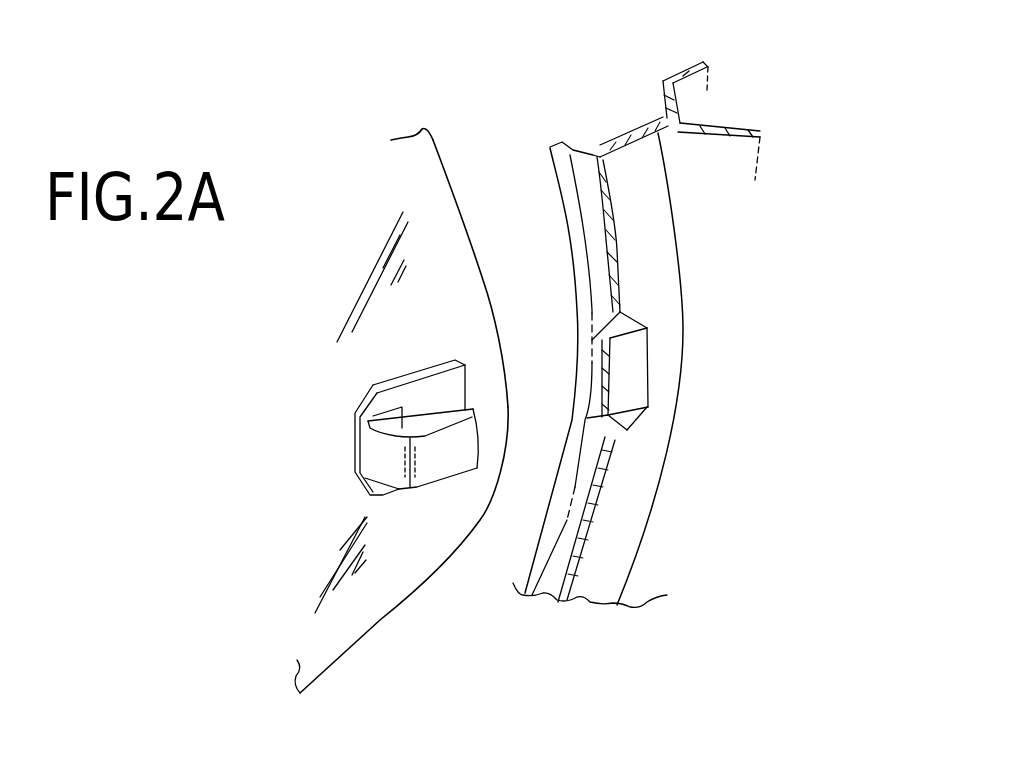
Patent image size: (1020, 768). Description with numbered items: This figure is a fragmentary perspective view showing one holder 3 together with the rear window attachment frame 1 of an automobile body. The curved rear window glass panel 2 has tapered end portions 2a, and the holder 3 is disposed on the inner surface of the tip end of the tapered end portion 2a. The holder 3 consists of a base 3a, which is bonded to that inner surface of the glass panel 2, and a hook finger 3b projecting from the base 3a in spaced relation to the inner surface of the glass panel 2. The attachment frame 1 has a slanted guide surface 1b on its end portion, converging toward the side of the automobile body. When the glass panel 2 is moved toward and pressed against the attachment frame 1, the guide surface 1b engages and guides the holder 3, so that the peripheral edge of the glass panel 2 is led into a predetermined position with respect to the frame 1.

The rear window attachment frame 1 is at (567, 141).
The slanted guide surface 1b is at (635, 373).
The curved rear window glass panel 2 is at (440, 140).
The tapered end portion 2a is at (418, 550).
The holder 3 is at (368, 460).
The base 3a is at (440, 382).
The hook finger 3b is at (466, 444).